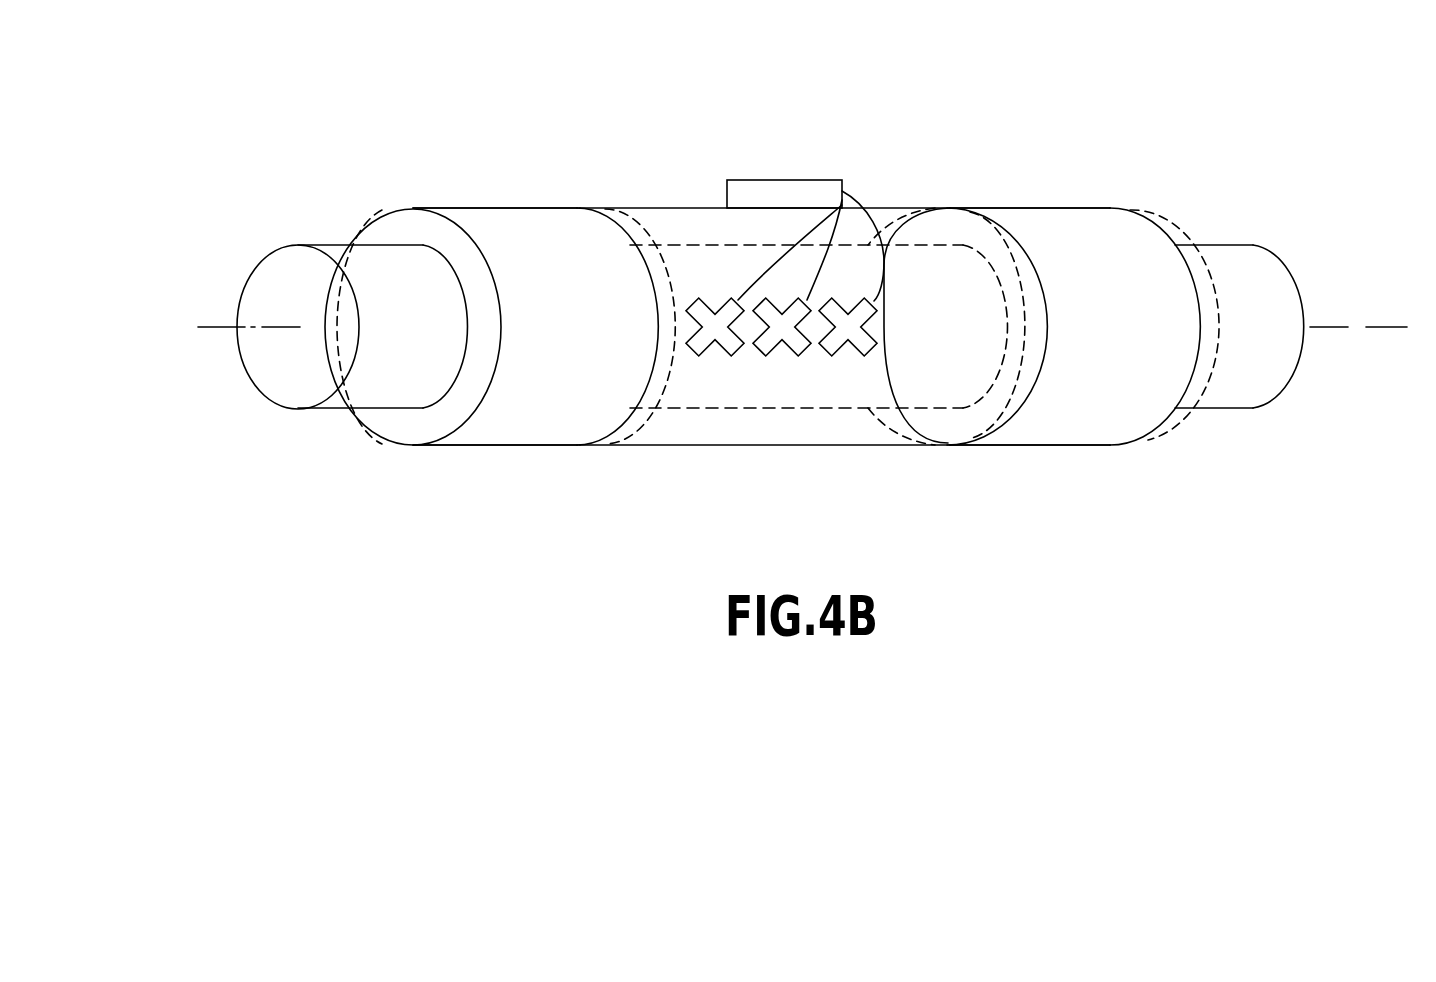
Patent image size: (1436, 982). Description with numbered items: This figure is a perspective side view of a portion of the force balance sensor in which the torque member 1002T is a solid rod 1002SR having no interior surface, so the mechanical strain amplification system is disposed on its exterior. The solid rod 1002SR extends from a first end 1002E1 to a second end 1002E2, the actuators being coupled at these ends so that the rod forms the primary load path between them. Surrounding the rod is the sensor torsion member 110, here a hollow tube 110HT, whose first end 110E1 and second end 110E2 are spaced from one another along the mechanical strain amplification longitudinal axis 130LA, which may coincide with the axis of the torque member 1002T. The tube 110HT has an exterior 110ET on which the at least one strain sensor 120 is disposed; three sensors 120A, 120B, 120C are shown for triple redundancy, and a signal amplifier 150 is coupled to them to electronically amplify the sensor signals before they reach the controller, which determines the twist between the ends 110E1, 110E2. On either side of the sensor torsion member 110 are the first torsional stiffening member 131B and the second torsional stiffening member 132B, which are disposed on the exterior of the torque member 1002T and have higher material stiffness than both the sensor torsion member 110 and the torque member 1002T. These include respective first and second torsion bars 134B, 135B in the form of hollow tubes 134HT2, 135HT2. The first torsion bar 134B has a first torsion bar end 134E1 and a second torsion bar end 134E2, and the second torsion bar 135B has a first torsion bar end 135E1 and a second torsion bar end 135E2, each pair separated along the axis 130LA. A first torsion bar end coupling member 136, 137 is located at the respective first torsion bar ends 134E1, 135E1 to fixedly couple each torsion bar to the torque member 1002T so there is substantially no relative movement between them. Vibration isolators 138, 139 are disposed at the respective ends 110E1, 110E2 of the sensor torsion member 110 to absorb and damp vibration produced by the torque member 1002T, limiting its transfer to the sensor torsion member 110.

The sensor torsion member 110 is at (887, 208).
The first end of sensor torsion member 110E1 is at (605, 207).
The second end of sensor torsion member 110E2 is at (995, 220).
The hollow tube 110HT is at (712, 208).
The exterior of hollow tube 110ET is at (694, 430).
The strain sensor 120 is at (846, 420).
The first strain sensor 120A is at (738, 347).
The second strain sensor 120B is at (807, 348).
The third strain sensor 120C is at (862, 345).
The mechanical strain amplification longitudinal axis 130LA is at (1352, 333).
The first torsional stiffening member 131B is at (485, 165).
The second torsional stiffening member 132B is at (1037, 165).
The first torsion bar 134B is at (537, 207).
The first torsion bar end of first torsion bar 134E1 is at (412, 210).
The second torsion bar end of first torsion bar 134E2 is at (580, 445).
The hollow tube of first torsion bar 134HT2 is at (489, 478).
The second torsion bar 135B is at (1063, 208).
The first torsion bar end of second torsion bar 135E1 is at (1103, 208).
The second torsion bar end of second torsion bar 135E2 is at (950, 208).
The hollow tube of second torsion bar 135HT2 is at (1071, 480).
The first torsion bar end coupling member 136 is at (377, 445).
The first torsion bar end coupling member 137 is at (1158, 437).
The vibration isolator 138 is at (610, 210).
The vibration isolator 139 is at (911, 440).
The signal amplifier 150 is at (775, 180).
The torque member 1002T is at (355, 245).
The first end of torque member 1002E1 is at (247, 372).
The second end of torque member 1002E2 is at (1297, 273).
The solid rod 1002SR is at (1248, 210).